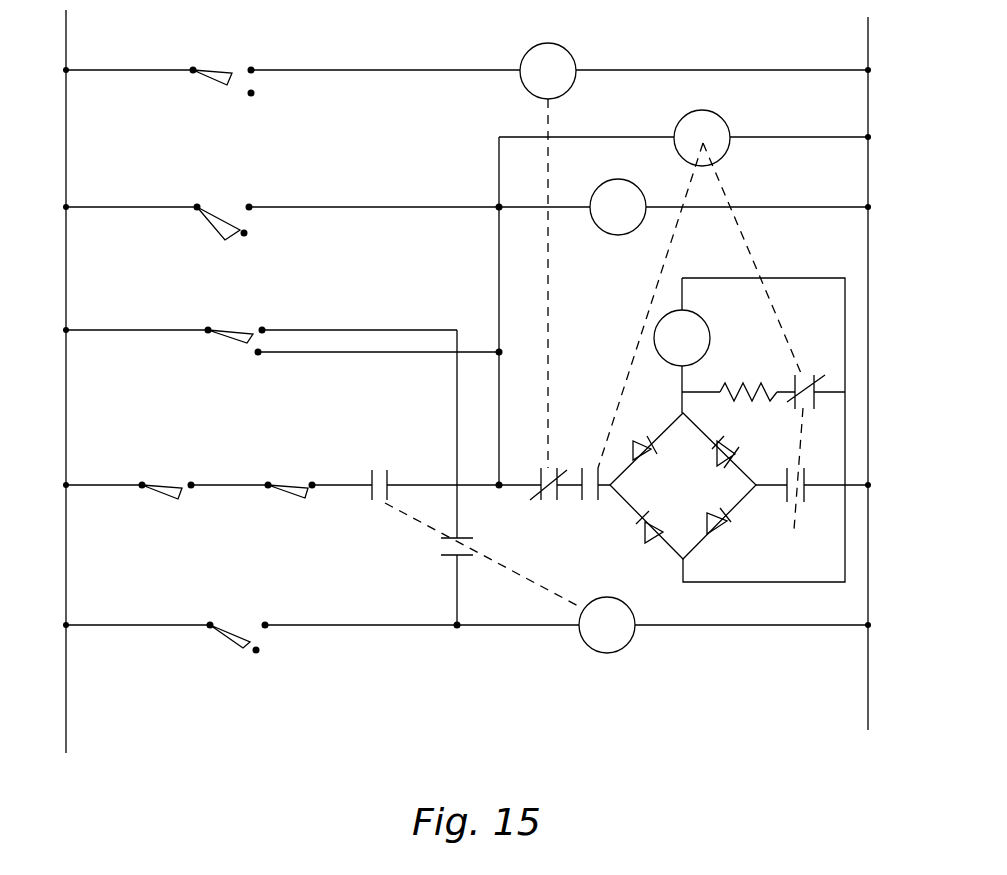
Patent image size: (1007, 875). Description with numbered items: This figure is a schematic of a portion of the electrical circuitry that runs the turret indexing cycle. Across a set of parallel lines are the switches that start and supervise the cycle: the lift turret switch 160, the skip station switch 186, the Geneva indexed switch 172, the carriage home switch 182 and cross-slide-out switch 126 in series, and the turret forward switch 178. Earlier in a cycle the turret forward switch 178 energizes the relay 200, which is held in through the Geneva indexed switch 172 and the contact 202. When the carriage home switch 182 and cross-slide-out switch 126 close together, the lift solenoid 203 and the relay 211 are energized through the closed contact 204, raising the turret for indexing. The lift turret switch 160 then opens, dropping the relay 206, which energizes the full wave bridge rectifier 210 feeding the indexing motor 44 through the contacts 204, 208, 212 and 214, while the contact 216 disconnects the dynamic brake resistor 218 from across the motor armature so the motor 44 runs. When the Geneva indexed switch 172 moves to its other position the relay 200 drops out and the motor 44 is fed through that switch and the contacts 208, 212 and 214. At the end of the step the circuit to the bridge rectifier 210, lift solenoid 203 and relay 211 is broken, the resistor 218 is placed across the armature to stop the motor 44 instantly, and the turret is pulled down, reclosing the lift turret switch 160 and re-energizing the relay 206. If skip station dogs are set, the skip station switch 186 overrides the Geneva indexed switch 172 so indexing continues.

The lift turret switch 160 is at (232, 72).
The skip station switch 186 is at (222, 224).
The Geneva indexed switch 172 is at (236, 328).
The carriage home switch 182 is at (173, 483).
The cross-slide-out switch 126 is at (292, 484).
The turret forward switch 178 is at (241, 630).
The relay 206 is at (571, 55).
The relay 211 is at (725, 122).
The lift solenoid 203 is at (618, 235).
The electric motor 44 is at (667, 360).
The relay 200 is at (624, 648).
The contact 204 is at (378, 502).
The contact 202 is at (468, 545).
The contact 208 is at (551, 500).
The contact 212 is at (595, 468).
The contact 214 is at (793, 503).
The contact 216 is at (803, 378).
The dynamic brake resistor 218 is at (748, 385).
The full wave bridge rectifier 210 is at (731, 459).